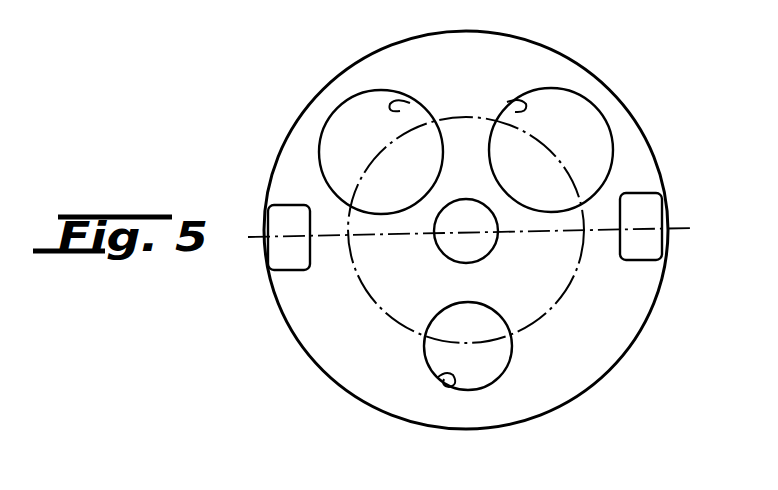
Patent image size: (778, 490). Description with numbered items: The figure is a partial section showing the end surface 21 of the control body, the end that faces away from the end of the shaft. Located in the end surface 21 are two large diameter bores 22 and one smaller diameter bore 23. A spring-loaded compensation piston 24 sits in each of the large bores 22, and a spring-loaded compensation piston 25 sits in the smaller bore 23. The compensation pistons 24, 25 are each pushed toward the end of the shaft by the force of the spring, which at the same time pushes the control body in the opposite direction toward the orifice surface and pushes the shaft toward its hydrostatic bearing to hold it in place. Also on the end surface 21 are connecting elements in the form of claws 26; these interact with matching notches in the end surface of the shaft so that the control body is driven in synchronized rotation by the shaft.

The end surface 21 is at (575, 357).
The large diameter bores 22 is at (507, 102).
The smaller diameter bore 23 is at (437, 378).
The compensation piston 24 is at (335, 137).
The compensation piston 25 is at (480, 372).
The claws 26 is at (641, 209).